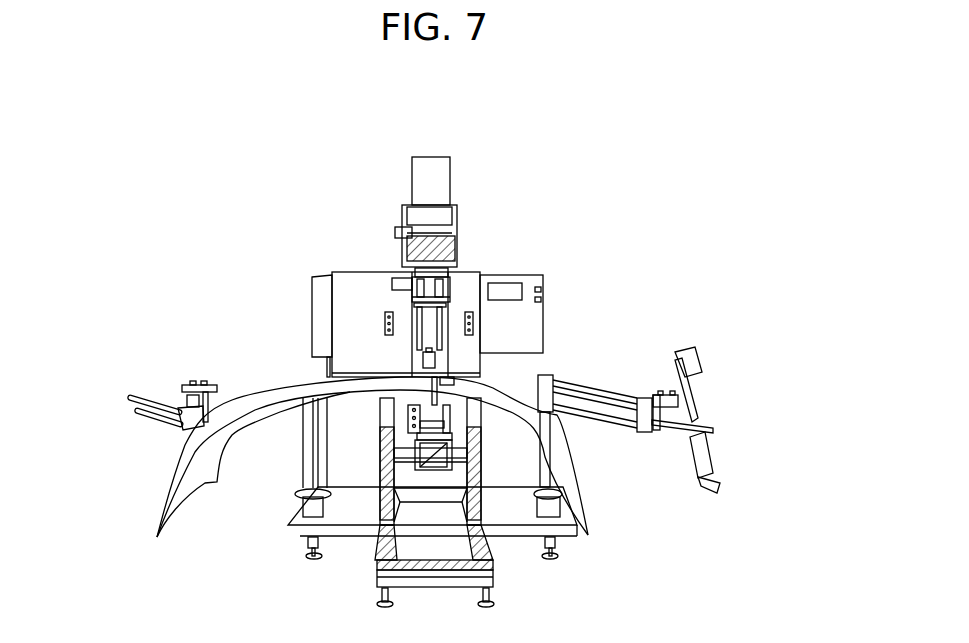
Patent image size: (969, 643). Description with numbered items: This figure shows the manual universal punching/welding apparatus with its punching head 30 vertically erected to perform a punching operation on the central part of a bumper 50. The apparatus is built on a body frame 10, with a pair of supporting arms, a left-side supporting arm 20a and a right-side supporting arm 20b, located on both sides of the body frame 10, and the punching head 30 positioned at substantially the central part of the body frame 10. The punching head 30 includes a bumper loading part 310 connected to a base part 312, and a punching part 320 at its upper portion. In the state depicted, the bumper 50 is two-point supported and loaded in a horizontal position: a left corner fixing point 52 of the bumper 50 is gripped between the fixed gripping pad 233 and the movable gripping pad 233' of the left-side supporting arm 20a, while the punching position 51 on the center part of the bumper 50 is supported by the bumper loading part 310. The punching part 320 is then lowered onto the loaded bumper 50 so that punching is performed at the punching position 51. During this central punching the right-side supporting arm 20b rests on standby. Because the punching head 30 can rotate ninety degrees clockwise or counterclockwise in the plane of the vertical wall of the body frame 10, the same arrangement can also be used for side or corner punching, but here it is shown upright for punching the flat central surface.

The body frame 10 is at (490, 550).
The punching head 30 is at (485, 214).
The bumper loading part 310 is at (415, 405).
The base part 312 is at (420, 455).
The punching part 320 is at (412, 283).
The bumper 50 is at (553, 378).
The punching position 51 is at (447, 382).
The left corner fixing point 52 is at (205, 385).
The fixed gripping pad 233 is at (372, 457).
The movable gripping pad 233' is at (132, 391).
The left-side supporting arm 20a is at (118, 431).
The right-side supporting arm 20b is at (722, 405).